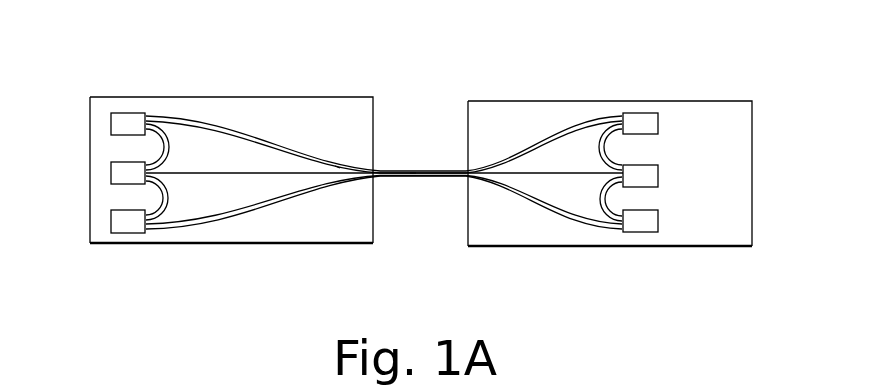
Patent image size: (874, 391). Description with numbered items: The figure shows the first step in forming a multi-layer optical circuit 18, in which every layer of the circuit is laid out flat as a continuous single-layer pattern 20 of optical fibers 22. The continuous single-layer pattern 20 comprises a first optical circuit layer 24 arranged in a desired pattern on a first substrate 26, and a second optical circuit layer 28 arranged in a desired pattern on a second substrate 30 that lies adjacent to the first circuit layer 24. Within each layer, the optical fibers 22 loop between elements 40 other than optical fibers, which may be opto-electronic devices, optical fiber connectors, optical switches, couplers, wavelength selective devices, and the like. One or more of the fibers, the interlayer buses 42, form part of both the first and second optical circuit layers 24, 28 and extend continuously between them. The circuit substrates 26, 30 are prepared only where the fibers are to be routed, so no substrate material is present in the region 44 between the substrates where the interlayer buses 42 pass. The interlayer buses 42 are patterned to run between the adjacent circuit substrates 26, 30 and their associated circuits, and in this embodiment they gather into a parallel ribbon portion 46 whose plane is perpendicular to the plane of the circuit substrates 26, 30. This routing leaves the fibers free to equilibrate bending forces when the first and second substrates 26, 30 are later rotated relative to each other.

The multi-layer optical circuit 18 is at (139, 54).
The continuous single-layer pattern 20 is at (612, 78).
The optical fibers 22 is at (147, 117).
The first optical circuit layer 24 is at (235, 235).
The first substrate 26 is at (148, 244).
The second optical circuit layer 28 is at (677, 209).
The second substrate 30 is at (752, 232).
The elements 40 is at (111, 124).
The interlayer buses 42 is at (334, 168).
The region 44 is at (434, 242).
The parallel ribbon portion 46 is at (414, 163).